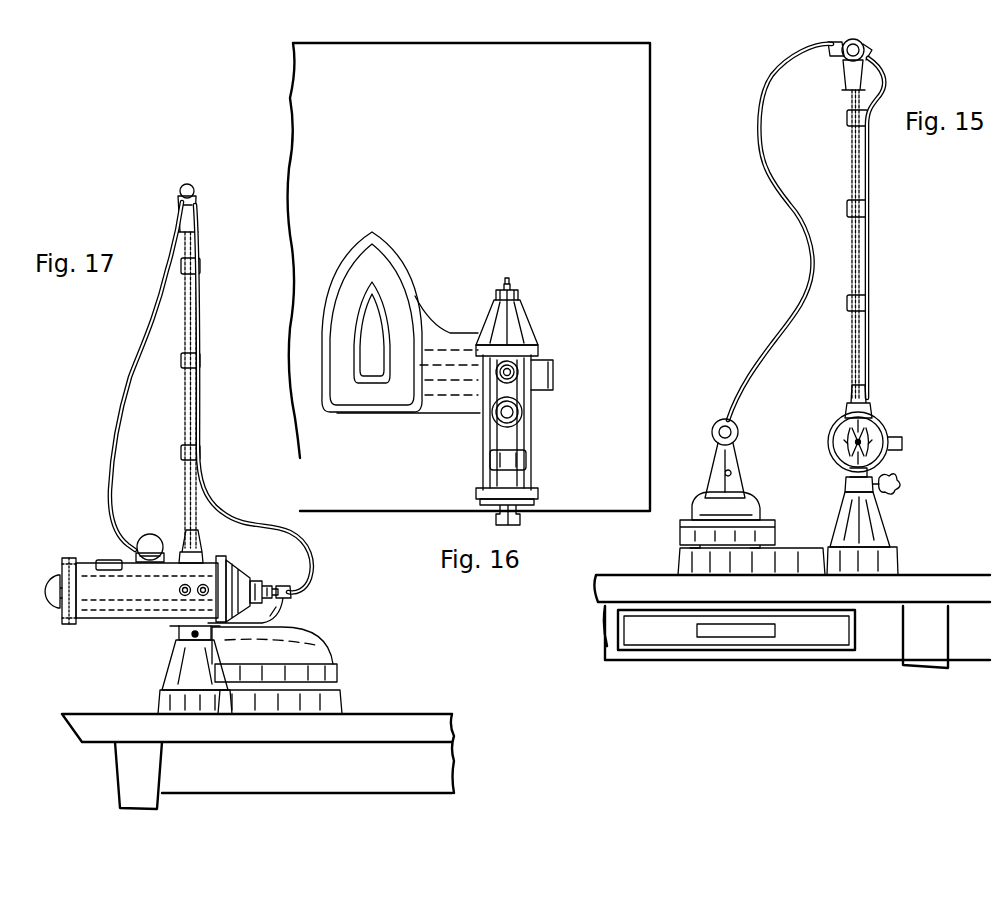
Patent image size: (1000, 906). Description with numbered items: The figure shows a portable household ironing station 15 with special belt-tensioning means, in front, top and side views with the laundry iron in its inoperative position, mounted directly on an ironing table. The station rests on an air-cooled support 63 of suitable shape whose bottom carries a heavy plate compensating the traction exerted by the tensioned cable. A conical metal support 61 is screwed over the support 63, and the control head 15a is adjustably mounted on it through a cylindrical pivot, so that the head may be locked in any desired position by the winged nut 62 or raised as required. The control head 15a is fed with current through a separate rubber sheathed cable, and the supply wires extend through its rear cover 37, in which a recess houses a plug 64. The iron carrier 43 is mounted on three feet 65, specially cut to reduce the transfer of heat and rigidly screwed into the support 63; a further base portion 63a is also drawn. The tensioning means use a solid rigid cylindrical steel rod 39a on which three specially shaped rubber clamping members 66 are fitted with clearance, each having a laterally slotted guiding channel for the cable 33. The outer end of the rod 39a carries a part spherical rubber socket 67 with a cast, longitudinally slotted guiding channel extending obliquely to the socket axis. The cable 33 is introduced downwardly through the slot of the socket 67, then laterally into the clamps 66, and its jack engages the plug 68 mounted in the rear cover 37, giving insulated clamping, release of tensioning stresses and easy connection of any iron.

In FIG. 16, the ironing station 15 is at (515, 438).
In FIG. 17, the control head 15a is at (90, 563).
In FIG. 15, the control head 15a is at (872, 430).
In FIG. 17, the cable 33 is at (215, 492).
In FIG. 15, the cable 33 is at (790, 226).
In FIG. 17, the rear cover 37 is at (236, 580).
In FIG. 16, the rear cover 37 is at (522, 332).
In FIG. 17, the solid rigid cylindrical steel rod 39a is at (185, 398).
In FIG. 15, the solid rigid cylindrical steel rod 39a is at (852, 155).
In FIG. 16, the iron carrier 43 is at (362, 278).
In FIG. 17, the conical metal support 61 is at (175, 668).
In FIG. 15, the conical metal support 61 is at (880, 525).
In FIG. 17, the winged nut 62 is at (178, 634).
In FIG. 15, the winged nut 62 is at (897, 480).
In FIG. 15, the air-cooled support 63 is at (690, 559).
In FIG. 17, the auxiliary support base 63a is at (338, 698).
In FIG. 16, the auxiliary support base 63a is at (444, 403).
In FIG. 17, the plug 64 is at (262, 585).
In FIG. 16, the plug 64 is at (514, 292).
In FIG. 17, the feet 65 is at (335, 672).
In FIG. 15, the feet 65 is at (683, 547).
In FIG. 17, the rubber clamping members 66 is at (220, 335).
In FIG. 15, the rubber clamping members 66 is at (868, 300).
In FIG. 17, the part spherical rubber socket 67 is at (196, 193).
In FIG. 15, the part spherical rubber socket 67 is at (865, 47).
In FIG. 17, the plug 68 is at (293, 594).